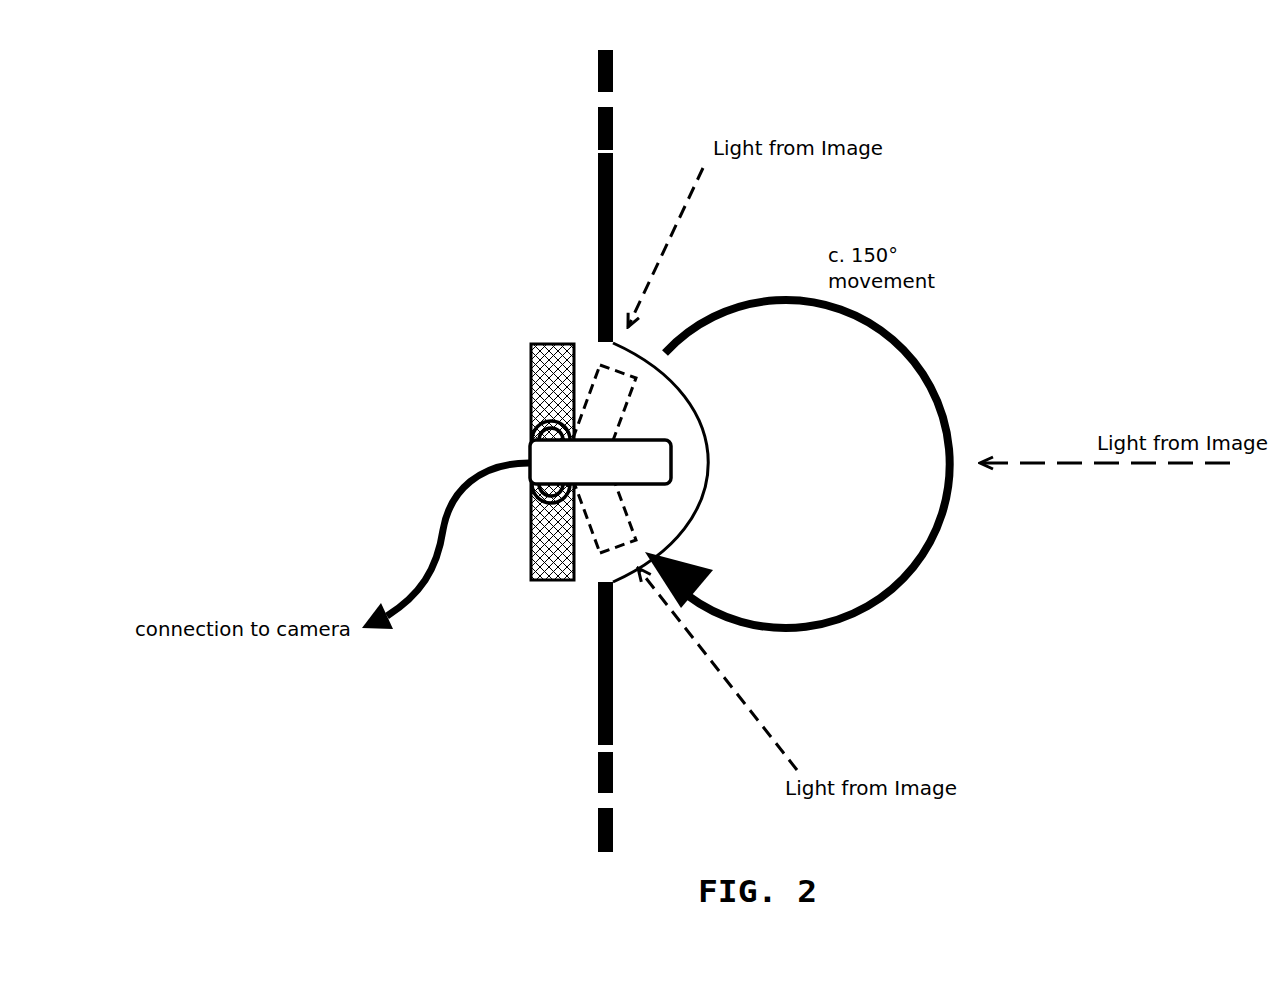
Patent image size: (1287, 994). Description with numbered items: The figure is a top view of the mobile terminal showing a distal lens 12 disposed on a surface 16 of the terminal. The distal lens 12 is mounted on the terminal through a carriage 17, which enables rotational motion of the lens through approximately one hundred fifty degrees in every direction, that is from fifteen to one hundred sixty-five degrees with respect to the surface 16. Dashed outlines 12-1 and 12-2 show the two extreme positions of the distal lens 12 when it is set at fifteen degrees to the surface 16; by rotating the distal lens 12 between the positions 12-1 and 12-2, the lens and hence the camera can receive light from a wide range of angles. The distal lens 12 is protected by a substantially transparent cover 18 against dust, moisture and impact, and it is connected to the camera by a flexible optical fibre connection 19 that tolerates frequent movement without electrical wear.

The distal lens 12 is at (531, 441).
The first extreme position of the distal lens 12-1 is at (600, 363).
The second extreme position of the distal lens 12-2 is at (597, 553).
The surface 16 is at (623, 140).
The carriage 17 is at (538, 420).
The cover 18 is at (625, 585).
The optical fibre connection 19 is at (422, 587).